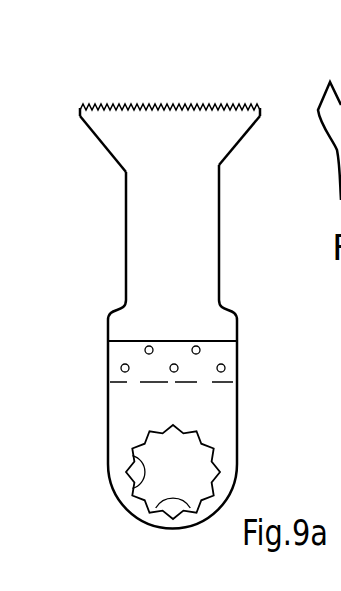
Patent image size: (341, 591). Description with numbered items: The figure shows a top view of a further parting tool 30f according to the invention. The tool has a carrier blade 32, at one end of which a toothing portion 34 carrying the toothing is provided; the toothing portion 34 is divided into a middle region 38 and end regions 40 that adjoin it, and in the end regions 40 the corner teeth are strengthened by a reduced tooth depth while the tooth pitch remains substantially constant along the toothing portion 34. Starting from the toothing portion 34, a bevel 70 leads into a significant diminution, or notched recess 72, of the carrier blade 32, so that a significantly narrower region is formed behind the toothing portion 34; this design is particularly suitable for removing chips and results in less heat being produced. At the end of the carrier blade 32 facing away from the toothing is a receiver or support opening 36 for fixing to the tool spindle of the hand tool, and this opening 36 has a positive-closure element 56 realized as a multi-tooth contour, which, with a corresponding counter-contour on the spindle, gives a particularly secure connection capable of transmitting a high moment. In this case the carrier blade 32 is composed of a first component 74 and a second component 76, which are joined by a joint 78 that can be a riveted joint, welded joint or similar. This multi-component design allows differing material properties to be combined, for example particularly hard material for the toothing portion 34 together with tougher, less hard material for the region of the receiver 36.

The tool 30f is at (107, 390).
The carrier blade 32 is at (137, 216).
The toothing portion 34 is at (182, 118).
The receiver or support opening 36 is at (158, 510).
The middle region 38 is at (165, 108).
The end regions 40 is at (82, 105).
The positive-closure element 56 is at (130, 487).
The bevel 70 is at (103, 145).
The notched recess 72 is at (125, 230).
The first component 74 is at (197, 247).
The second component 76 is at (220, 417).
The joint 78 is at (145, 350).